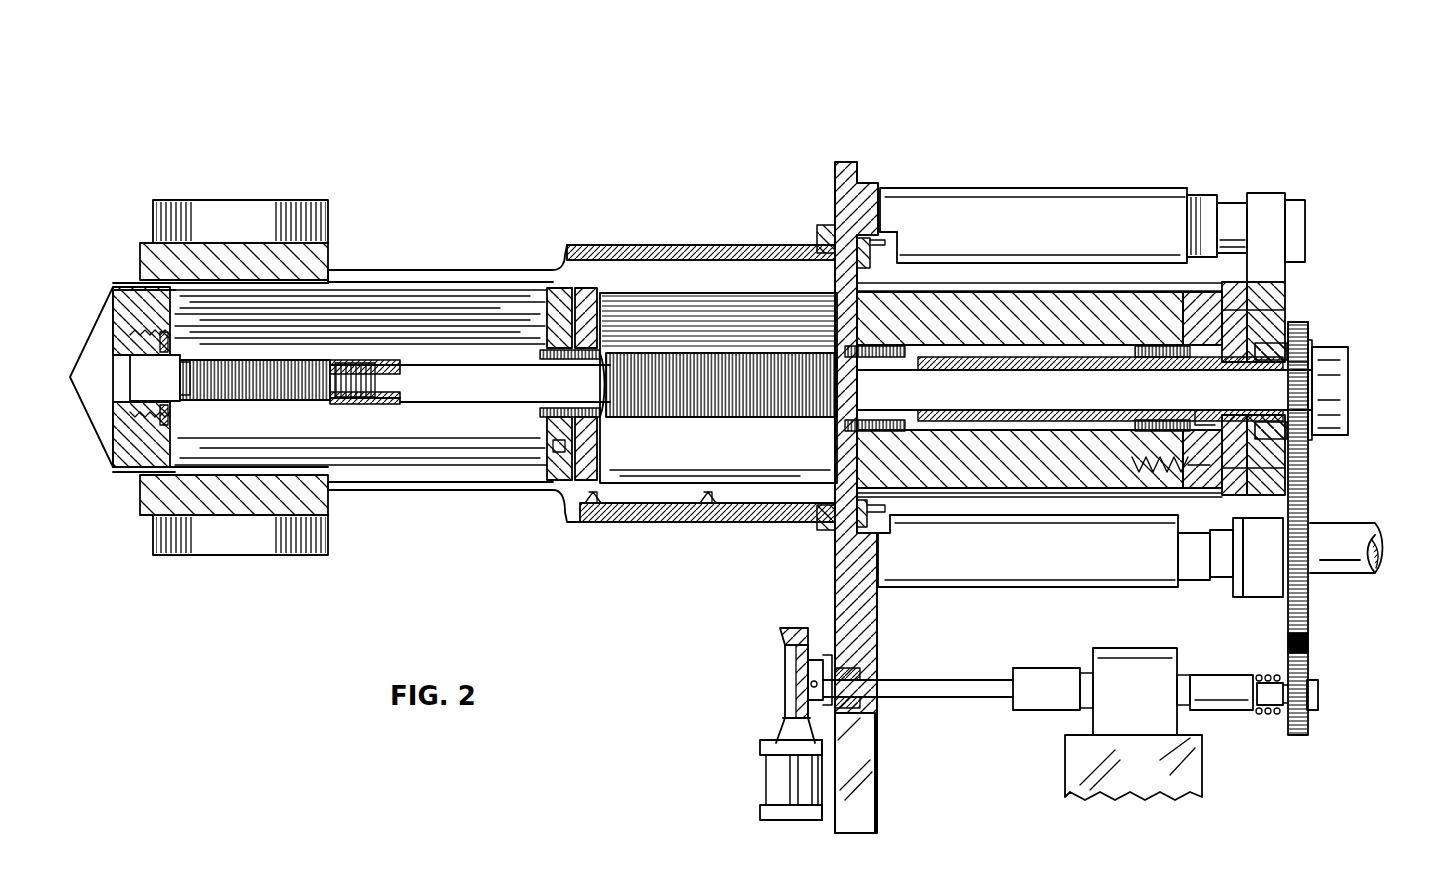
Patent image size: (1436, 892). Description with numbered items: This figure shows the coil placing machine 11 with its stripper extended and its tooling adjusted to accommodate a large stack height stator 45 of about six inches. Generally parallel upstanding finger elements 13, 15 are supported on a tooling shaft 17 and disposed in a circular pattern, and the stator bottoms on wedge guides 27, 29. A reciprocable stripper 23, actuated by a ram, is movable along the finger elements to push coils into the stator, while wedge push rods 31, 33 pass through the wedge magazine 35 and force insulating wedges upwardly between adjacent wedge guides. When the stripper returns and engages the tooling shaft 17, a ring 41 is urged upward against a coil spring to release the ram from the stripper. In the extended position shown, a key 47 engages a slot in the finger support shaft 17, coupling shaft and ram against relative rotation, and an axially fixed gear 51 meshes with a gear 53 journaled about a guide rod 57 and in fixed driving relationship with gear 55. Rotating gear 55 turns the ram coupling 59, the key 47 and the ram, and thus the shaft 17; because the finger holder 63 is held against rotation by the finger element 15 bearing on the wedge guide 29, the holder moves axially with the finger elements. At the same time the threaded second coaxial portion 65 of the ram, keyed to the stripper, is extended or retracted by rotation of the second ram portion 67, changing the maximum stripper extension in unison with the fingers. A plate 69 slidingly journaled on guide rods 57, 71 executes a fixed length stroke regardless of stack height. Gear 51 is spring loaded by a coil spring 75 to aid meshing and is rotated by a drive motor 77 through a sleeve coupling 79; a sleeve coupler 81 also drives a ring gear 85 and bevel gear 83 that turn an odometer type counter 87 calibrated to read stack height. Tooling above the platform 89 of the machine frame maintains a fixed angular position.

The coil placing machine 11 is at (688, 185).
The finger element 13 is at (140, 272).
The finger element 15 is at (140, 470).
The shaft 17 is at (540, 415).
The stripper 23 is at (92, 342).
The wedge guide 27 is at (425, 270).
The wedge guide 29 is at (505, 492).
The wedge push rod 31 is at (1213, 287).
The wedge push rod 33 is at (422, 487).
The wedge magazine 35 is at (980, 302).
The ring 41 is at (170, 398).
The stator 45 is at (248, 212).
The key 47 is at (1078, 407).
The gear 51 is at (1302, 700).
The gear 53 is at (1305, 640).
The gear 55 is at (1305, 322).
The guide rod 57 is at (1355, 535).
The ram coupling 59 is at (1340, 400).
The finger holder 63 is at (548, 308).
The second coaxial portion of the ram 65 is at (268, 398).
The second ram portion 67 is at (358, 400).
The plate 69 is at (1275, 200).
The guide rod 71 is at (1232, 213).
The coil spring 75 is at (1268, 715).
The drive motor 77 is at (1125, 660).
The sleeve coupling 79 is at (1222, 712).
The sleeve coupler 81 is at (1040, 678).
The bevel gear 83 is at (780, 635).
The ring gear 85 is at (795, 678).
The odometer type counter 87 is at (778, 780).
The platform 89 is at (862, 785).